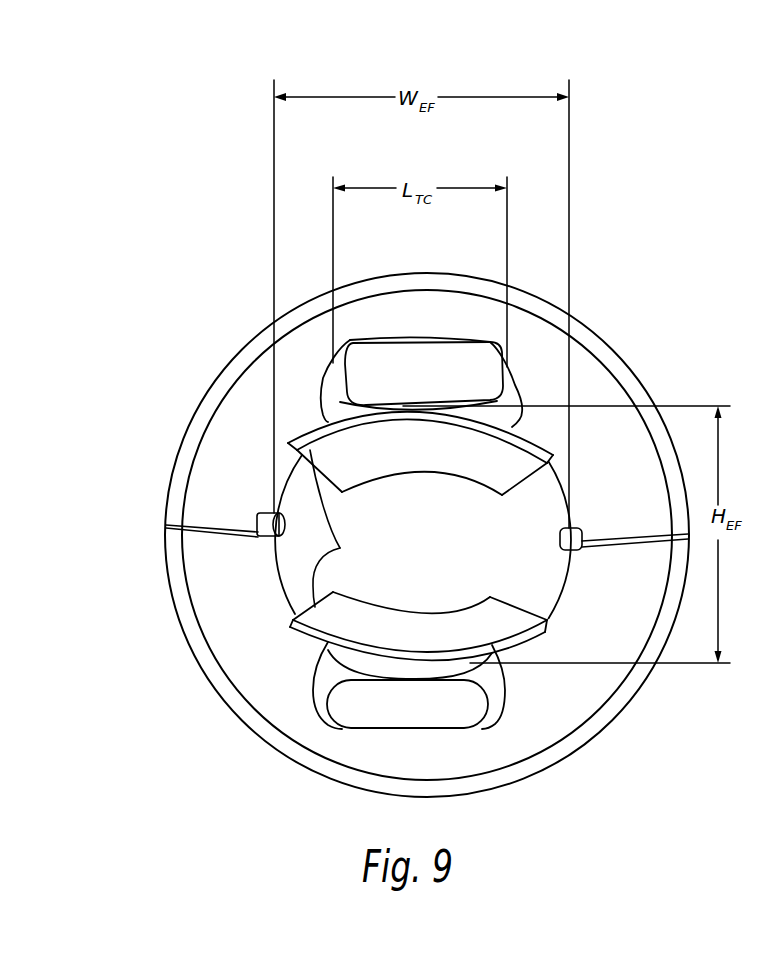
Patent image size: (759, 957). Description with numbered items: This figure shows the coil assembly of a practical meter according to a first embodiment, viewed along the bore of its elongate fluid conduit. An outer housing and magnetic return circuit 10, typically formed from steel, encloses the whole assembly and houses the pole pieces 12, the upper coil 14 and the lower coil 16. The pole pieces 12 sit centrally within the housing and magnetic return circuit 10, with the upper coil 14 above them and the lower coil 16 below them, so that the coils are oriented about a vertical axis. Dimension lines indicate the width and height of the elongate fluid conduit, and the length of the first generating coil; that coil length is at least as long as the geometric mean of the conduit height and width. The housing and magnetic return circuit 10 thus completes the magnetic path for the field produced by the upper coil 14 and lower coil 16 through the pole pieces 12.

The housing and magnetic return circuit 10 is at (208, 653).
The pole pieces 12 is at (340, 548).
The upper coil 14 is at (445, 373).
The lower coil 16 is at (362, 700).